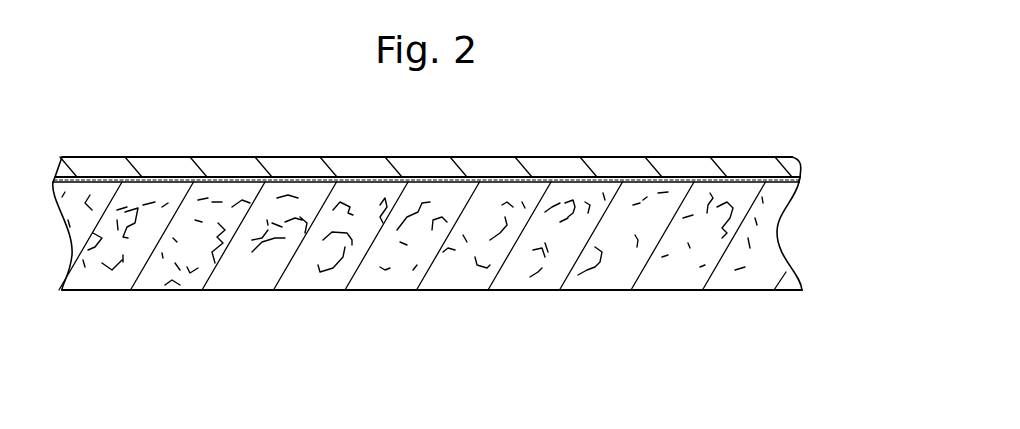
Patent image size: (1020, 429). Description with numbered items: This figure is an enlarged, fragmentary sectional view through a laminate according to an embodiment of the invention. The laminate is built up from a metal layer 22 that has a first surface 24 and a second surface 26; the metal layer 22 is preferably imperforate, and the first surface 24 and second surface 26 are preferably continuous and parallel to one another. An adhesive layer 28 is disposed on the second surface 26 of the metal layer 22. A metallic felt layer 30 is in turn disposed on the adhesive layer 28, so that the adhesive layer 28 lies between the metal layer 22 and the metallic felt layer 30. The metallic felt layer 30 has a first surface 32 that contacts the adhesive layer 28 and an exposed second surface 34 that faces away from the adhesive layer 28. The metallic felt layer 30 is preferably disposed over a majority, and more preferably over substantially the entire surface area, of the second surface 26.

The metal layer 22 is at (337, 174).
The first surface 24 is at (183, 157).
The second surface 26 is at (689, 177).
The adhesive layer 28 is at (798, 177).
The metallic felt layer 30 is at (638, 263).
The first surface 32 is at (449, 179).
The exposed second surface 34 is at (495, 290).